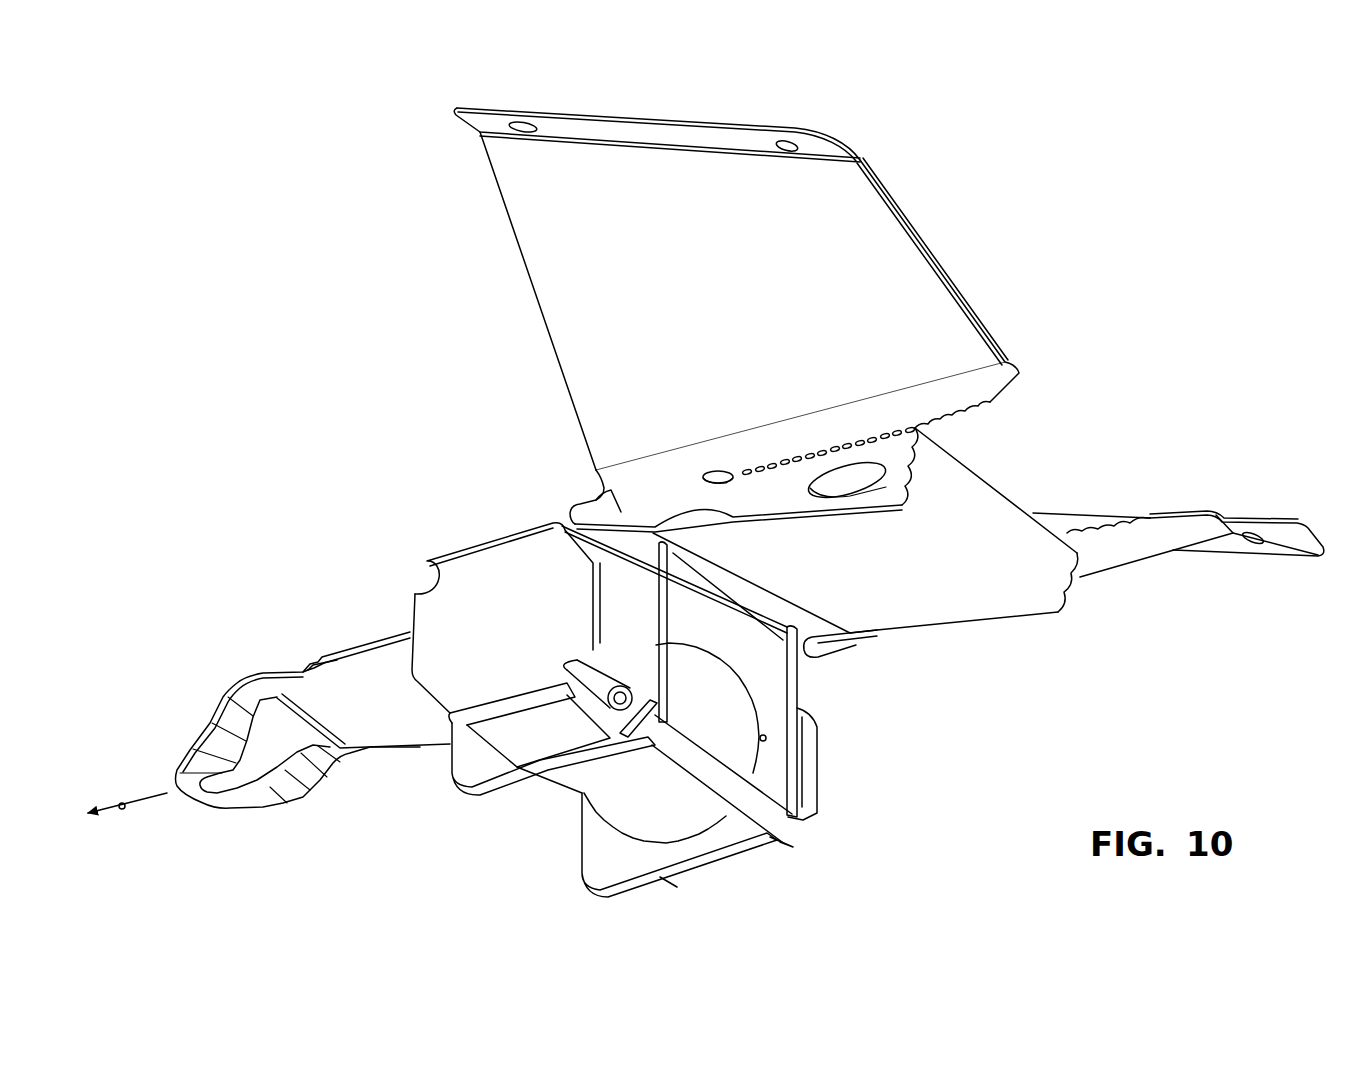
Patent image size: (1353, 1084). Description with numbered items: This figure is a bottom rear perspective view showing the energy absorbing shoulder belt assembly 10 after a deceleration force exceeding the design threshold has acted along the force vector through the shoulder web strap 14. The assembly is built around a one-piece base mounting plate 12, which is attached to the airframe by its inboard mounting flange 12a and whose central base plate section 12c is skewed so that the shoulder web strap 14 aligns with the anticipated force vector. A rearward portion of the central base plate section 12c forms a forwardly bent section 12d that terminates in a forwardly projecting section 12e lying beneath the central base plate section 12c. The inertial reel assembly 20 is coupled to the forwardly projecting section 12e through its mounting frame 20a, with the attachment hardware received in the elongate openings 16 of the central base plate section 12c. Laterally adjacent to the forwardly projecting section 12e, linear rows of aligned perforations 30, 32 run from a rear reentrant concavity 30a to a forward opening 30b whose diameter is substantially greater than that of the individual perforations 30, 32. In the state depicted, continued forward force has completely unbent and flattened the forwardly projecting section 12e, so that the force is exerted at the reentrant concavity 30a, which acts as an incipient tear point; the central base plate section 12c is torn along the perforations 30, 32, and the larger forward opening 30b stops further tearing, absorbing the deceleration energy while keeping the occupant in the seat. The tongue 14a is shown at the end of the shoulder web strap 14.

The energy absorbing shoulder belt assembly 10 is at (412, 473).
The base mounting plate 12 is at (962, 281).
The inboard mounting flange 12a is at (736, 316).
The central base plate section 12c is at (746, 480).
The forwardly bent section 12d is at (865, 530).
The forwardly projecting section 12e is at (812, 641).
The shoulder web strap 14 is at (263, 749).
The tongue of base plate 14a is at (290, 797).
The elongate openings 16 is at (654, 526).
The inertial reel assembly 20 is at (643, 710).
The mounting frame 20a is at (750, 647).
The perforations 30 is at (845, 435).
The rear reentrant concavity 30a is at (1003, 396).
The forward opening 30b is at (713, 470).
The perforations 32 is at (1083, 519).